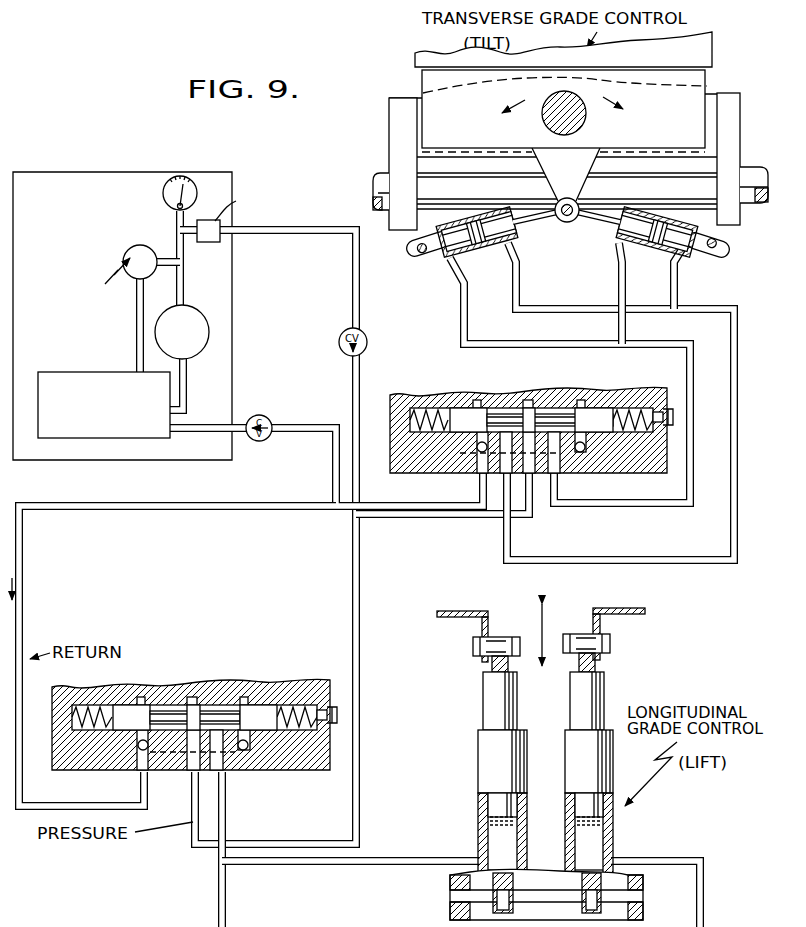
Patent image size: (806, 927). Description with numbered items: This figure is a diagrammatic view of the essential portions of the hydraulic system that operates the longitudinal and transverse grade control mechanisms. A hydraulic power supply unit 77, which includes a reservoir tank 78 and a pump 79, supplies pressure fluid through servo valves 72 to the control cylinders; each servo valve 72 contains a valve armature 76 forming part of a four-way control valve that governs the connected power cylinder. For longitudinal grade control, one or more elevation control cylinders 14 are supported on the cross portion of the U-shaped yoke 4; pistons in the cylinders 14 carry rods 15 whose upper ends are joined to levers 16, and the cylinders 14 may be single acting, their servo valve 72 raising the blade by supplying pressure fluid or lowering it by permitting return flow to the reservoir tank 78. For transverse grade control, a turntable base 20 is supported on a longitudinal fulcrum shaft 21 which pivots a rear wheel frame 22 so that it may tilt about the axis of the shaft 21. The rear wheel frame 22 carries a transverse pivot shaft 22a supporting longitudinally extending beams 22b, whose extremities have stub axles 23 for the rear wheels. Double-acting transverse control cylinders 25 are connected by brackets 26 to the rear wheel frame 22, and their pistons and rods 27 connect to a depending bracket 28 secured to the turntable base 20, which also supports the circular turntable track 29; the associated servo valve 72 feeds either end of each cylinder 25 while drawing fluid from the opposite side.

The U-shaped yoke 4 is at (445, 909).
The elevation control cylinder 14 is at (577, 765).
The rod 15 is at (498, 656).
The lever 16 is at (446, 611).
The turntable base 20 is at (428, 88).
The longitudinal fulcrum shaft 21 is at (583, 118).
The rear wheel frame 22 is at (567, 166).
The transverse pivot shaft 22a is at (432, 187).
The longitudinally extending beam 22b is at (403, 216).
The stub axle 23 is at (378, 182).
The transverse control cylinder 25 is at (470, 253).
The bracket 26 is at (412, 246).
The piston rod 27 is at (528, 230).
The depending bracket 28 is at (541, 227).
The circular turntable track 29 is at (710, 55).
The servo valve 72 is at (394, 394).
The valve armature 76 is at (510, 415).
The hydraulic power supply unit 77 is at (89, 170).
The reservoir tank 78 is at (98, 382).
The pump 79 is at (187, 311).